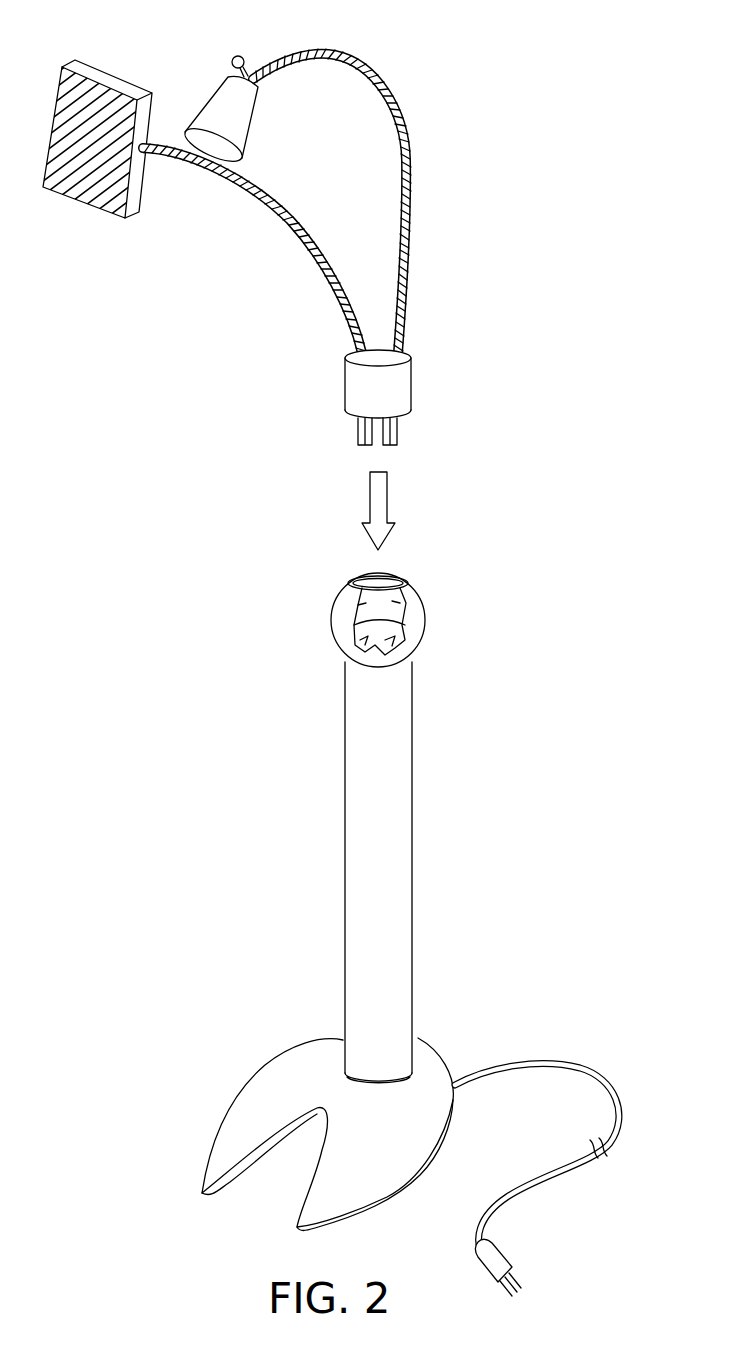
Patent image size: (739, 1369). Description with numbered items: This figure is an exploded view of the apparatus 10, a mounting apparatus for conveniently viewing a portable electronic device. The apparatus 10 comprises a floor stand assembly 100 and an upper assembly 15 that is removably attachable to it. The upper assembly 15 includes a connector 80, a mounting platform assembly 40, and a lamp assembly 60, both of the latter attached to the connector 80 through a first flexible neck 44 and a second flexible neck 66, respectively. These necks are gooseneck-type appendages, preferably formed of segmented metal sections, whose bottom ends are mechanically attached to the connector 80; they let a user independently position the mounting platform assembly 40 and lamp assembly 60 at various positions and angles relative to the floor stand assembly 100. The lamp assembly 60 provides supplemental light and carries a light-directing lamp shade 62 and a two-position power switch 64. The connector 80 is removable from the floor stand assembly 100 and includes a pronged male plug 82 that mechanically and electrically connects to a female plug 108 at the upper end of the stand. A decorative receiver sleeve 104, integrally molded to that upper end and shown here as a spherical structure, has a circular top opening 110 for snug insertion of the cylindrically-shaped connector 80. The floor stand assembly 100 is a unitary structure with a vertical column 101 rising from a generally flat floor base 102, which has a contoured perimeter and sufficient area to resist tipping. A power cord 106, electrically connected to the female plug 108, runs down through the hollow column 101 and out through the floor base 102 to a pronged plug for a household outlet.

The apparatus 10 is at (227, 598).
The upper assembly 15 is at (253, 263).
The mounting platform assembly 40 is at (111, 72).
The first flexible neck 44 is at (305, 233).
The lamp assembly 60 is at (367, 201).
The lamp shade 62 is at (245, 115).
The power switch 64 is at (238, 54).
The second flexible neck 66 is at (395, 112).
The connector 80 is at (402, 387).
The pronged male plug 82 is at (372, 430).
The floor stand assembly 100 is at (374, 872).
The vertical column 101 is at (413, 742).
The floor base 102 is at (273, 1087).
The receiver sleeve 104 is at (382, 603).
The power cord 106 is at (545, 1073).
The female plug 108 is at (387, 637).
The circular top opening 110 is at (390, 573).